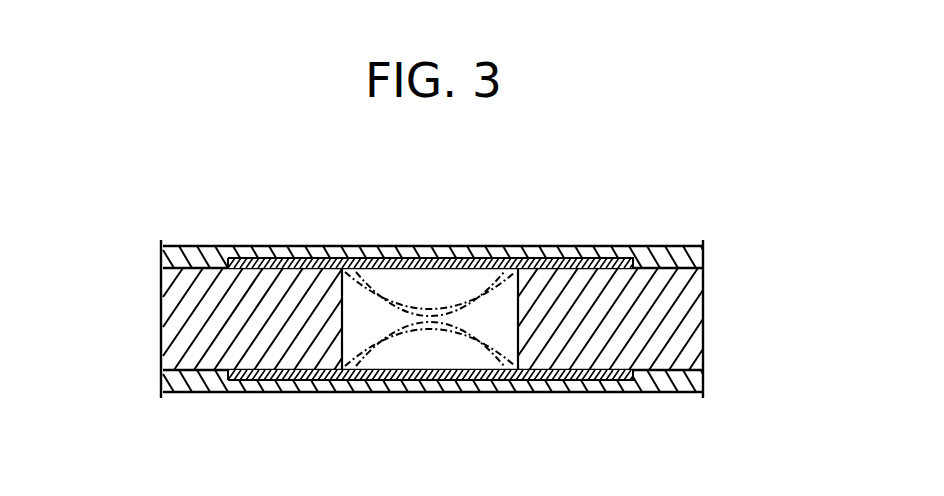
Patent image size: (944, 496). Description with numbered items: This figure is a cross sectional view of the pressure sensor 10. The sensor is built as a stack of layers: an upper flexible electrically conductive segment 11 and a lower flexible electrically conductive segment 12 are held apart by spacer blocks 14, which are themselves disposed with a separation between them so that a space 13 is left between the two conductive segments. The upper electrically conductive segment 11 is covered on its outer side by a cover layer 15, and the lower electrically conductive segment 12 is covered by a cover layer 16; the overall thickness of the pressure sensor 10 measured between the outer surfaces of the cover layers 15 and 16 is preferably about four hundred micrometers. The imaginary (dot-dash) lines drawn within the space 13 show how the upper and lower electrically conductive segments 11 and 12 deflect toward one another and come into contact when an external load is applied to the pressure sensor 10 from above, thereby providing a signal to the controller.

The pressure sensor 10 is at (640, 217).
The upper flexible electrically conductive segment 11 is at (338, 262).
The lower flexible electrically conductive segment 12 is at (372, 378).
The space 13 is at (426, 376).
The spacer blocks 14 is at (180, 310).
The cover layer 15 is at (518, 262).
The cover layer 16 is at (527, 378).